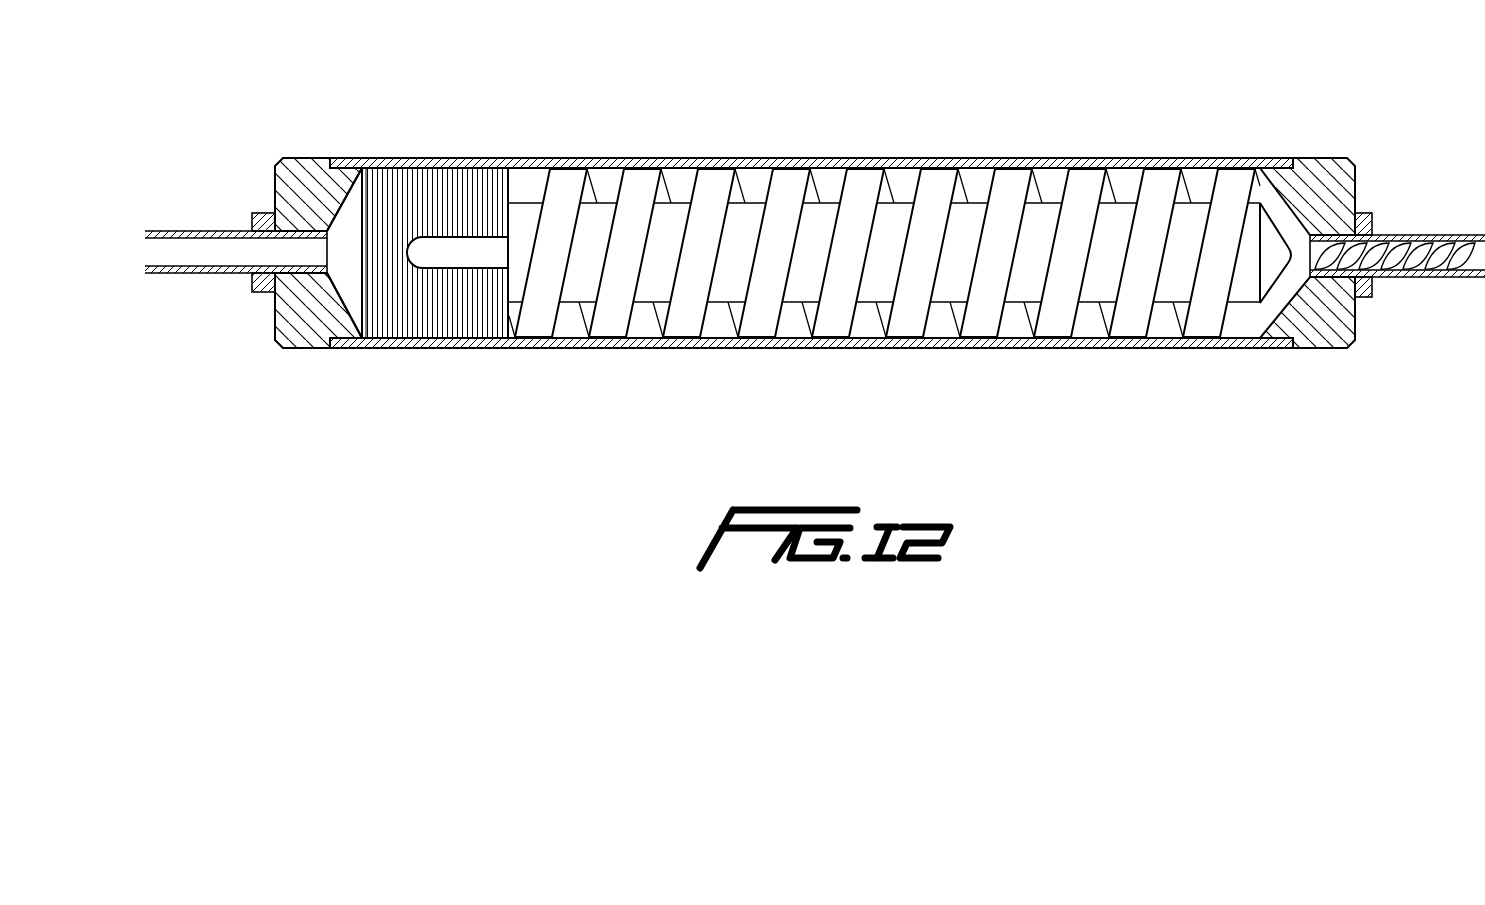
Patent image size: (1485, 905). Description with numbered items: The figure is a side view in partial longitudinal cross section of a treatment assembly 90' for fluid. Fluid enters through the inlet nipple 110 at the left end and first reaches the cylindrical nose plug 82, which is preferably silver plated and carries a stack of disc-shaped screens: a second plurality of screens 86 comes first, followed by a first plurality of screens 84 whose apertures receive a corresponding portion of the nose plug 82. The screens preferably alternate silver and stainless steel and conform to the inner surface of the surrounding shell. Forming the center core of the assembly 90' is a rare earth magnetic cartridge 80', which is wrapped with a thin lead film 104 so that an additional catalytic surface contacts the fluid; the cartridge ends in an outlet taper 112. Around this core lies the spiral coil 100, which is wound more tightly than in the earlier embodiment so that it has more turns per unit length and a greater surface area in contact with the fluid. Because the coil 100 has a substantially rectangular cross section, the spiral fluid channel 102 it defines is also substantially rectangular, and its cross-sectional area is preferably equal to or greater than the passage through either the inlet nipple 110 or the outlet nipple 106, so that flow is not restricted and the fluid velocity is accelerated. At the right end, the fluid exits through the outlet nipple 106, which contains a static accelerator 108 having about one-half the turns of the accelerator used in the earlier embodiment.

The treatment assembly 90' is at (815, 182).
The second plurality of screens 86 is at (358, 205).
The inlet nipple 110 is at (202, 231).
The first plurality of screens 84 is at (443, 194).
The nose plug 82 is at (508, 243).
The spiral fluid channel 102 is at (565, 328).
The spiral coil 100 is at (633, 322).
The magnetic cartridge 80' is at (946, 219).
The lead film 104 is at (609, 204).
The outlet taper 112 is at (1273, 297).
The static accelerator 108 is at (1427, 278).
The outlet nipple 106 is at (1397, 235).